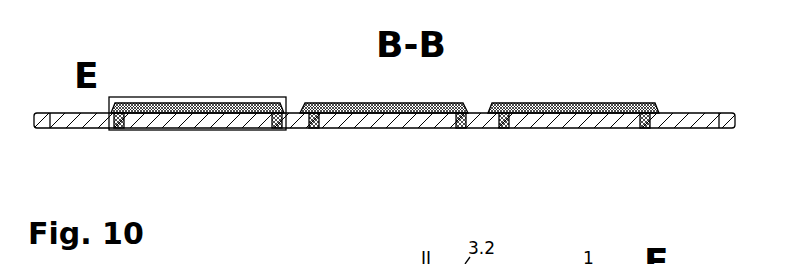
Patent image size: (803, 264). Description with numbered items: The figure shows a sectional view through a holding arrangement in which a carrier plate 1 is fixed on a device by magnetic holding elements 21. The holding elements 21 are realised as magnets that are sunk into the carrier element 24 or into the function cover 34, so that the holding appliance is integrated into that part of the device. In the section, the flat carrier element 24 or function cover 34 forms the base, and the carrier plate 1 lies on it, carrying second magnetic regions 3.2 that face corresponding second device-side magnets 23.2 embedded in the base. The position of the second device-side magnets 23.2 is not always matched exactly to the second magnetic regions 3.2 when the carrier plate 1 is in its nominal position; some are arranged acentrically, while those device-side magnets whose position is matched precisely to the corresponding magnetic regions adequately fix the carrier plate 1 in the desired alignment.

The carrier plate 1 is at (392, 115).
The second magnetic region 3.2 is at (220, 69).
The holding element 21 is at (603, 160).
The second device-side magnet 23.2 is at (225, 149).
The carrier element 24 is at (392, 147).
The function cover 34 is at (384, 120).